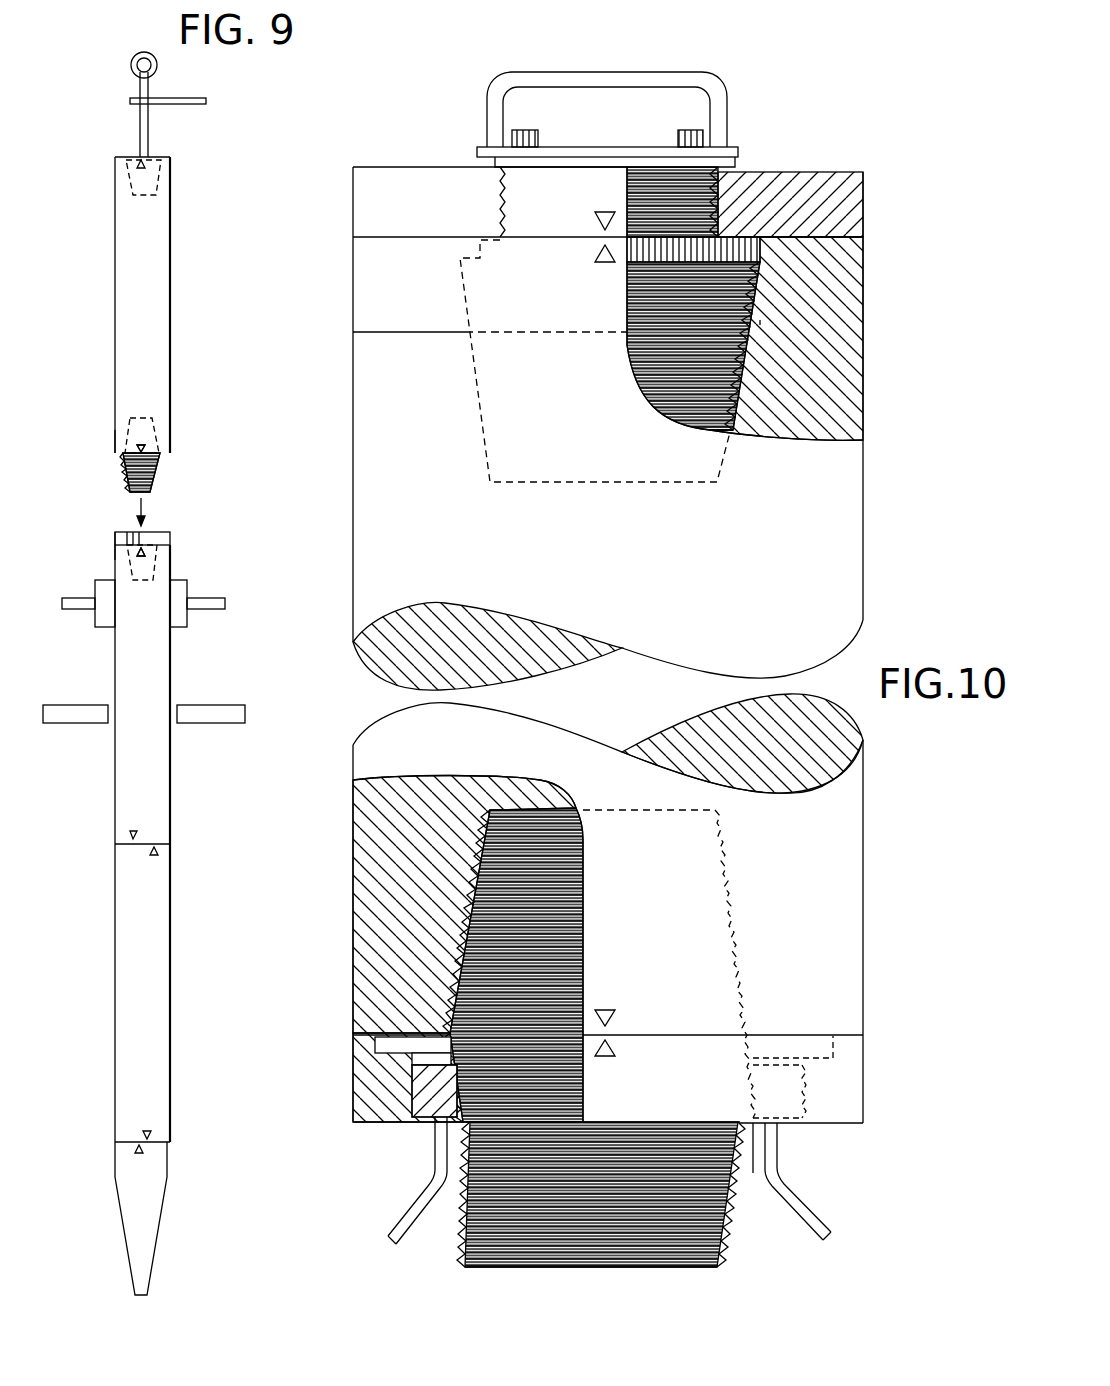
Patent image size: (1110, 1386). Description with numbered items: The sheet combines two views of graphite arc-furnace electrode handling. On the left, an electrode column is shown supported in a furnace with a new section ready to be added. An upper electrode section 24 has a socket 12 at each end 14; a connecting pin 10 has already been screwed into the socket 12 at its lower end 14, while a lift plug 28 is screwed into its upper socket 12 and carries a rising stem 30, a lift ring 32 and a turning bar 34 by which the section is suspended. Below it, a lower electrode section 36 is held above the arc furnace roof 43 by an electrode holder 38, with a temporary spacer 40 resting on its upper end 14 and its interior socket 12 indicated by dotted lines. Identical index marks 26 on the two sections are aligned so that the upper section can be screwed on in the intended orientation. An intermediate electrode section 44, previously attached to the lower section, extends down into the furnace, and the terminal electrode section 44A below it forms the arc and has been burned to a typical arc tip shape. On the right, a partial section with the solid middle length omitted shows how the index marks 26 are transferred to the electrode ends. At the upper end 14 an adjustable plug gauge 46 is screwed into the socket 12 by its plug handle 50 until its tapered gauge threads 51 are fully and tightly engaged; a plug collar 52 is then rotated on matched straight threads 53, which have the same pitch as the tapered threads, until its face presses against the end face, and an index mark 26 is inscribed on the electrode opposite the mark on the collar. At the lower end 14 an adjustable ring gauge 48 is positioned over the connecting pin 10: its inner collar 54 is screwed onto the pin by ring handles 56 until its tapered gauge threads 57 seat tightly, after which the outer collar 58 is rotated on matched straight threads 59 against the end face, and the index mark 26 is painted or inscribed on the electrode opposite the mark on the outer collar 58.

In FIG. 9, the connecting pin 10 is at (158, 476).
In FIG. 10, the connecting pin 10 is at (722, 1222).
In FIG. 9, the socket 12 is at (130, 182).
In FIG. 10, the socket 12 is at (728, 455).
In FIG. 9, the electrode end 14 is at (115, 437).
In FIG. 10, the electrode end 14 is at (865, 330).
In FIG. 9, the upper electrode section 24 is at (172, 298).
In FIG. 9, the index mark 26 is at (148, 450).
In FIG. 10, the index mark 26 is at (598, 222).
In FIG. 9, the lift plug 28 is at (160, 176).
In FIG. 9, the rising stem 30 is at (150, 127).
In FIG. 9, the lift ring 32 is at (133, 58).
In FIG. 9, the turning bar 34 is at (177, 97).
In FIG. 9, the lower electrode section 36 is at (172, 663).
In FIG. 9, the electrode holder 38 is at (182, 583).
In FIG. 9, the temporary spacer 40 is at (162, 533).
In FIG. 9, the arc furnace roof 43 is at (200, 722).
In FIG. 9, the intermediate electrode section 44 is at (172, 972).
In FIG. 9, the terminal electrode section 44A is at (158, 1232).
In FIG. 10, the adjustable plug gauge 46 is at (733, 253).
In FIG. 10, the adjustable ring gauge 48 is at (365, 1075).
In FIG. 10, the plug handle 50 is at (672, 72).
In FIG. 10, the tapered gauge threads 51 is at (762, 322).
In FIG. 10, the plug collar 52 is at (865, 195).
In FIG. 10, the matched straight threads 53 is at (730, 172).
In FIG. 10, the inner collar 54 is at (613, 1194).
In FIG. 10, the ring handles 56 is at (420, 1200).
In FIG. 10, the tapered gauge threads 57 is at (417, 1104).
In FIG. 10, the outer collar 58 is at (863, 1058).
In FIG. 10, the matched straight threads 59 is at (372, 1072).